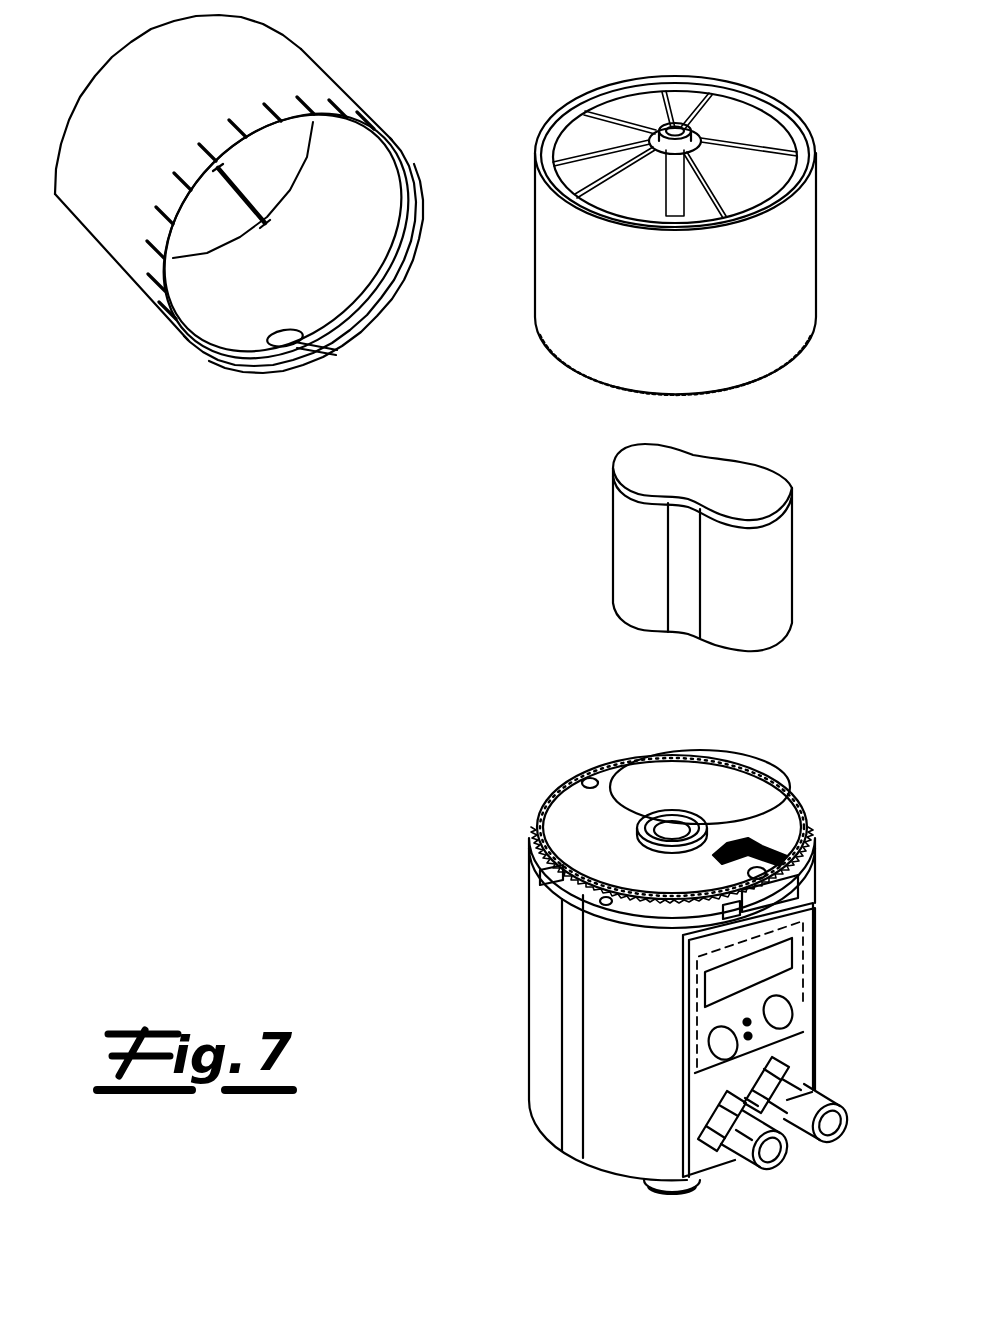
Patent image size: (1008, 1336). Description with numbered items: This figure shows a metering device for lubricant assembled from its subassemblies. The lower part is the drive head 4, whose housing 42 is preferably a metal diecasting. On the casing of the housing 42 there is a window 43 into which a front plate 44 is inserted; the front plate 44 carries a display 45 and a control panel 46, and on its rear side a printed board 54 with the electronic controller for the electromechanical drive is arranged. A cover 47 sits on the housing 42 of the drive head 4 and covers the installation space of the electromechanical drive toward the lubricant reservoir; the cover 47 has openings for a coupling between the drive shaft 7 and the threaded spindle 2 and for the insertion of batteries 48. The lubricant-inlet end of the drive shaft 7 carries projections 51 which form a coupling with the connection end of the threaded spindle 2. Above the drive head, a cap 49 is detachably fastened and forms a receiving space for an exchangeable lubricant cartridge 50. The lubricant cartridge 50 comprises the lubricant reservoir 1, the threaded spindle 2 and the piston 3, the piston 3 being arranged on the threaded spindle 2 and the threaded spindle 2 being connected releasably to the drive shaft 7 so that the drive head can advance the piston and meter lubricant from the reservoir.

The lubricant reservoir 1 is at (807, 303).
The threaded spindle 2 is at (671, 127).
The piston 3 is at (566, 92).
The drive head 4 is at (642, 977).
The drive shaft 7 is at (705, 805).
The housing 42 is at (532, 987).
The window 43 is at (721, 1052).
The front plate 44 is at (800, 977).
The display 45 is at (818, 907).
The control panel 46 is at (820, 1013).
The cover 47 is at (552, 825).
The batteries 48 is at (780, 565).
The cap 49 is at (151, 343).
The lubricant cartridge 50 is at (701, 236).
The projections 51 is at (697, 813).
The printed board 54 is at (802, 1008).